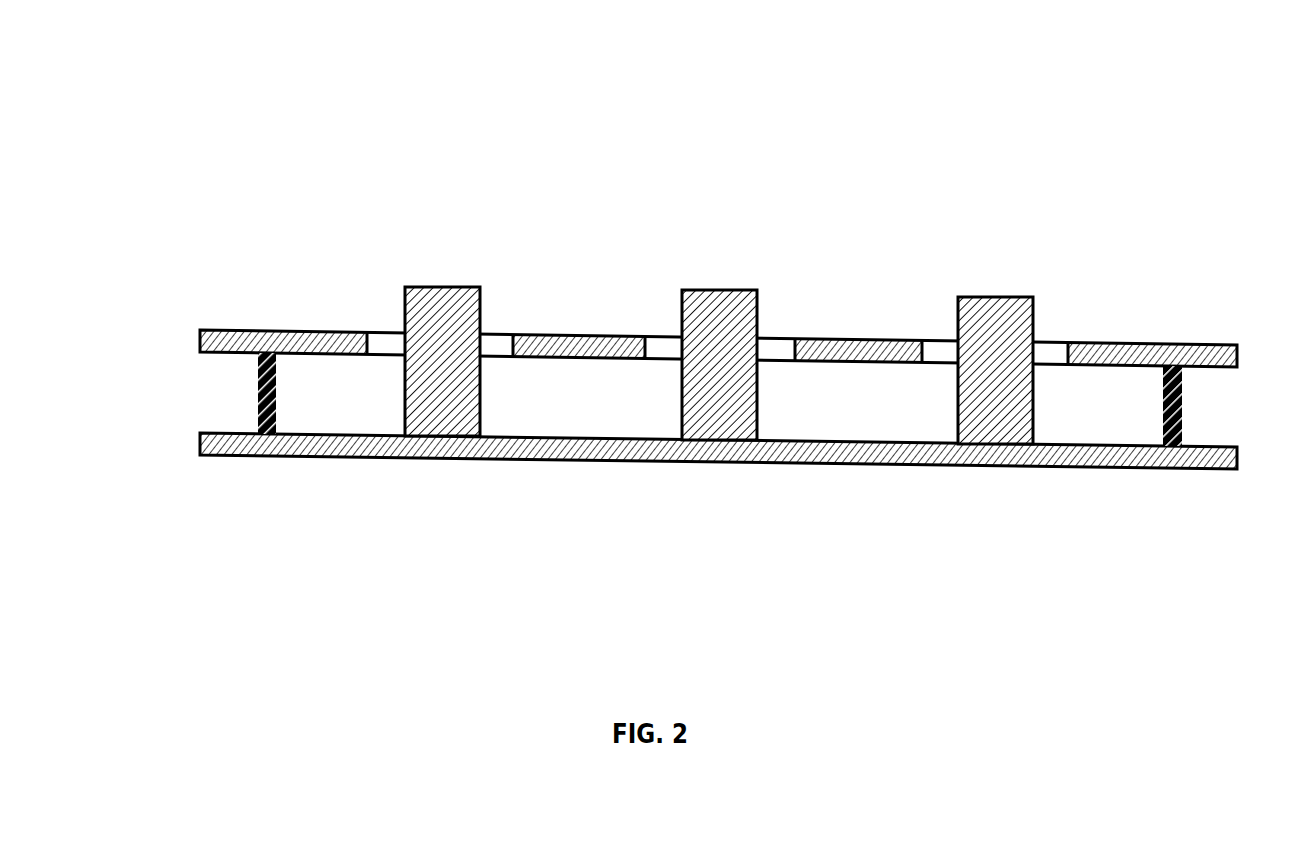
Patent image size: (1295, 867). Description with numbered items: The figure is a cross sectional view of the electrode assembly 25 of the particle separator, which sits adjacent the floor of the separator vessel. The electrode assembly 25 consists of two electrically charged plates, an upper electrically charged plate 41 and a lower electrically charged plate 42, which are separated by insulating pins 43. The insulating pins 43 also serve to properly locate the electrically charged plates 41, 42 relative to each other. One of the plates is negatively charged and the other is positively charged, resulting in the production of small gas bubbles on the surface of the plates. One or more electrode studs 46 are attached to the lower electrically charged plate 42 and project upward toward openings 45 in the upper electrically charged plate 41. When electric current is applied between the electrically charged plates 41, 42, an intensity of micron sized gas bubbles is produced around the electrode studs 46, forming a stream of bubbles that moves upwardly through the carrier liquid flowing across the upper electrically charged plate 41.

The electrode assembly 25 is at (716, 308).
The upper electrically charged plate 41 is at (1232, 342).
The lower electrically charged plate 42 is at (1230, 468).
The insulating pins 43 is at (260, 425).
The openings 45 is at (498, 333).
The electrode studs 46 is at (437, 284).